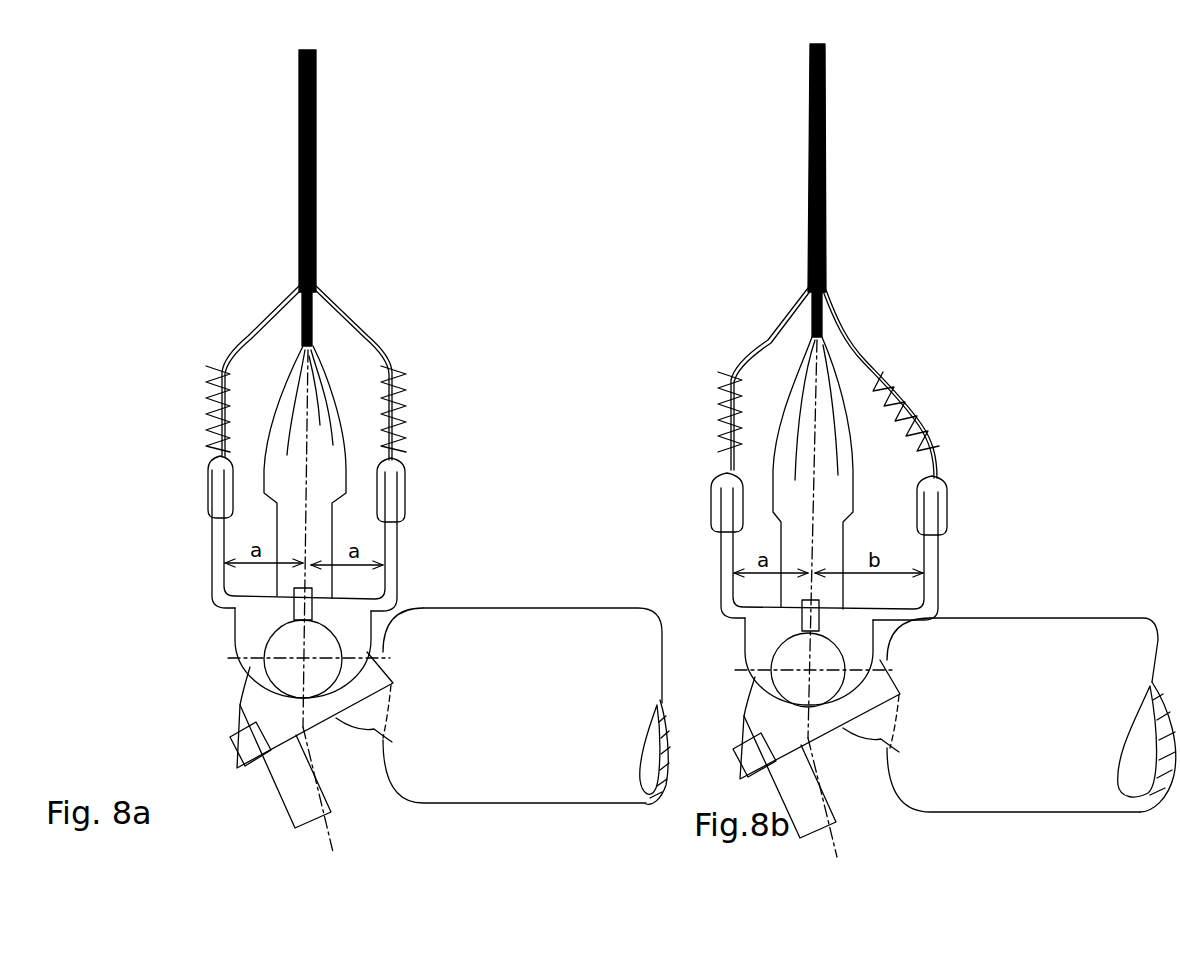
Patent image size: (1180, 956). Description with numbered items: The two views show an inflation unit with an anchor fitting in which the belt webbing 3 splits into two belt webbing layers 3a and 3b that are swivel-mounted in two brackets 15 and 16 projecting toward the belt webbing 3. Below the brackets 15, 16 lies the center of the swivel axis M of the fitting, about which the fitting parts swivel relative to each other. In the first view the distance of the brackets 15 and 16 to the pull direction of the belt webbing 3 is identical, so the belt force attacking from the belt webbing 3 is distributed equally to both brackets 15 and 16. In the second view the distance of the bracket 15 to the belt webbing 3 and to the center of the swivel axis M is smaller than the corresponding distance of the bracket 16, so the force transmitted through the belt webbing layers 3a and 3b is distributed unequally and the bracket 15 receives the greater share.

In FIG. 8A, the belt webbing 3 is at (299, 197).
In FIG. 8A, the belt webbing layer 3a is at (353, 330).
In FIG. 8B, the belt webbing layer 3a is at (862, 350).
In FIG. 8A, the belt webbing layer 3b is at (249, 337).
In FIG. 8B, the belt webbing layer 3b is at (770, 343).
In FIG. 8A, the bracket 15 is at (213, 543).
In FIG. 8B, the bracket 15 is at (723, 573).
In FIG. 8A, the bracket 16 is at (391, 548).
In FIG. 8B, the bracket 16 is at (929, 578).
In FIG. 8A, the center of the swivel axis M is at (303, 659).
In FIG. 8B, the center of the swivel axis M is at (808, 670).